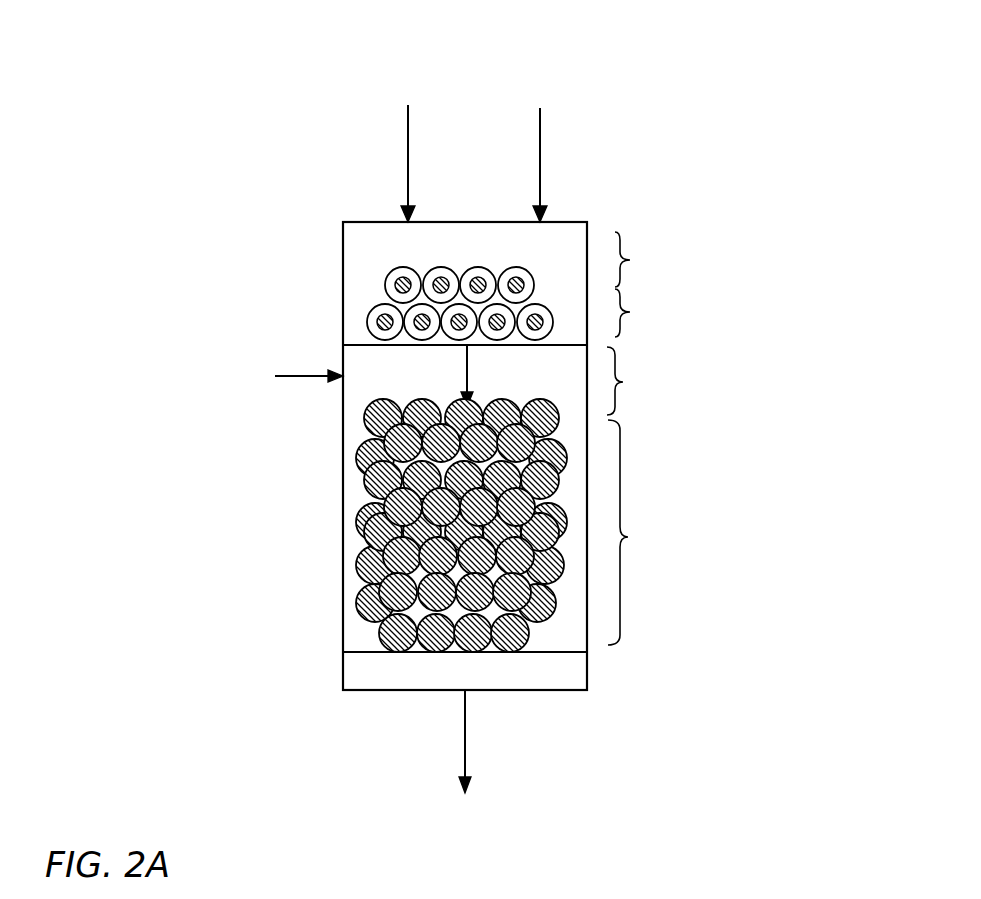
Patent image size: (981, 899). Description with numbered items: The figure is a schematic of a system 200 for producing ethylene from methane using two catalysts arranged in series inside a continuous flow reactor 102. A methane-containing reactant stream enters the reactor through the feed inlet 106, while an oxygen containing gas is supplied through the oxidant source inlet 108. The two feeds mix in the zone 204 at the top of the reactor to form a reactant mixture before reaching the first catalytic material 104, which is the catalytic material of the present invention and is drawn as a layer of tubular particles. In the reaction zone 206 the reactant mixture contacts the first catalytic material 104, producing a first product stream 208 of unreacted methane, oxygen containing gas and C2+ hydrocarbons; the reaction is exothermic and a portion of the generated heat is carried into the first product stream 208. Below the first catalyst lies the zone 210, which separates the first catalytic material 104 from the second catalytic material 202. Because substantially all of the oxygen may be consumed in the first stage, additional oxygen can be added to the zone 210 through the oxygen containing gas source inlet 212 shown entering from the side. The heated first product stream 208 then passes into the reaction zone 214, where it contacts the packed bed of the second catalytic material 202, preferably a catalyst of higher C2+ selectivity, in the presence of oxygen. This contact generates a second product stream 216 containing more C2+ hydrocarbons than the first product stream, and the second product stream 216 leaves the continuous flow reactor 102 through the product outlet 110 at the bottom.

The system 200 is at (588, 103).
The continuous flow reactor 102 is at (342, 222).
The first catalytic material 104 is at (385, 275).
The feed inlet 106 is at (407, 218).
The oxidant source inlet 108 is at (535, 218).
The product outlet 110 is at (462, 693).
The second catalytic material 202 is at (370, 490).
The zone 204 is at (654, 259).
The reaction zone 206 is at (656, 313).
The first product stream 208 is at (467, 378).
The zone 210 is at (647, 381).
The oxygen containing gas source inlet 212 is at (342, 374).
The reaction zone 214 is at (650, 532).
The second product stream 216 is at (463, 767).